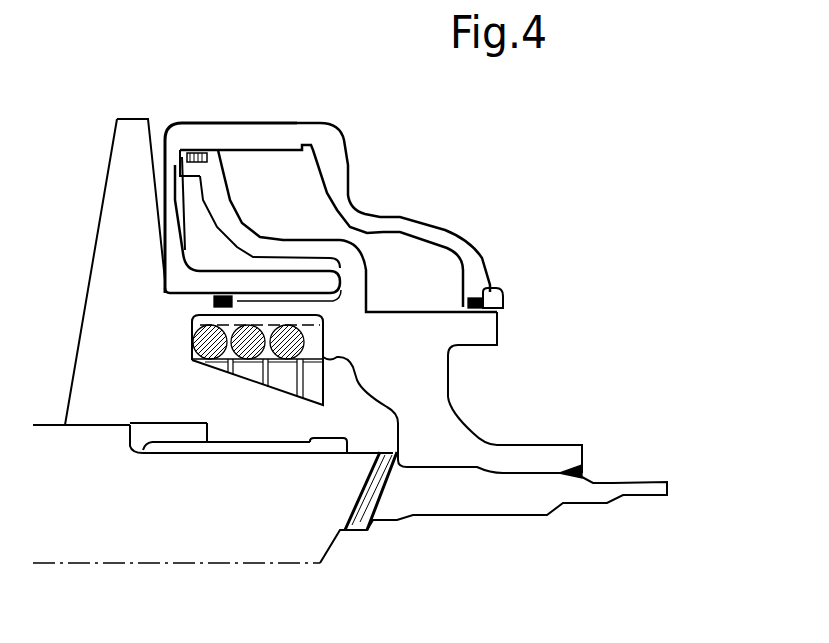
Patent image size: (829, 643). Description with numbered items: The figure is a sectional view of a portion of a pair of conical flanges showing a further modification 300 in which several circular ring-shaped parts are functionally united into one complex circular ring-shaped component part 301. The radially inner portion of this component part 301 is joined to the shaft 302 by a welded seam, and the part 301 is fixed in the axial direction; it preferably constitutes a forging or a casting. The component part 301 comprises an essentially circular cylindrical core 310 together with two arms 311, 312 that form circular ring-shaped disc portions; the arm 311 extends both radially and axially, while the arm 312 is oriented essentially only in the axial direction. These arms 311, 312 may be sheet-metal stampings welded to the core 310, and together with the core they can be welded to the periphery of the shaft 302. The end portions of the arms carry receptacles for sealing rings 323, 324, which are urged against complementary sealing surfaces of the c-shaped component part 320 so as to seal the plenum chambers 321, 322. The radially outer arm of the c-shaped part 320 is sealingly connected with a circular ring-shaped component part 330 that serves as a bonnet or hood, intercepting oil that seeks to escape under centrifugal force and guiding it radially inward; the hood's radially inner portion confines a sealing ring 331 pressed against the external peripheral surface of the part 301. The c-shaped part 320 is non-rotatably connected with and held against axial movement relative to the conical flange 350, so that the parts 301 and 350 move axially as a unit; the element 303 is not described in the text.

The modification 300 is at (592, 268).
The complex circular ring-shaped component part 301 is at (477, 325).
The shaft 302 is at (227, 540).
The snap ring 303 is at (573, 479).
The circular cylindrical core 310 is at (427, 388).
The arm 311 is at (227, 217).
The arm 312 is at (257, 303).
The c-shaped component part 320 is at (185, 133).
The plenum chamber 321 is at (195, 225).
The plenum chamber 322 is at (405, 306).
The sealing ring 323 is at (213, 300).
The sealing ring 324 is at (182, 158).
The circular ring-shaped component part (hood) 330 is at (330, 153).
The sealing ring 331 is at (482, 300).
The conical flange 350 is at (137, 130).